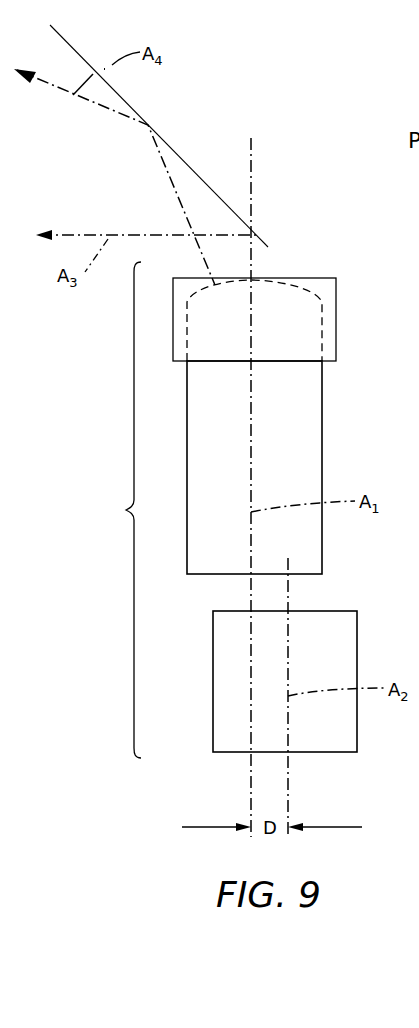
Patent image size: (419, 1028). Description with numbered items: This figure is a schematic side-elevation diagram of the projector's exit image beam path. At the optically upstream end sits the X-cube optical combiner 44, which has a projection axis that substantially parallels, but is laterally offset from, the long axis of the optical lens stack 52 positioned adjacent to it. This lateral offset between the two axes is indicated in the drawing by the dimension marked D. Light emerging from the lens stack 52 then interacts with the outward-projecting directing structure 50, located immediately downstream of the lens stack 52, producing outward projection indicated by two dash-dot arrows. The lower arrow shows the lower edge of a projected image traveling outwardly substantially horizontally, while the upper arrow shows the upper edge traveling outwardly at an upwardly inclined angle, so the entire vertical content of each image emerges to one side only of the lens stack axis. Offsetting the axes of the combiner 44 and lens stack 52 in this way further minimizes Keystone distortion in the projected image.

The X-cube optical combiner 44 is at (214, 711).
The outward-projecting directing structure 50 is at (170, 145).
The optical lens stack 52 is at (323, 415).